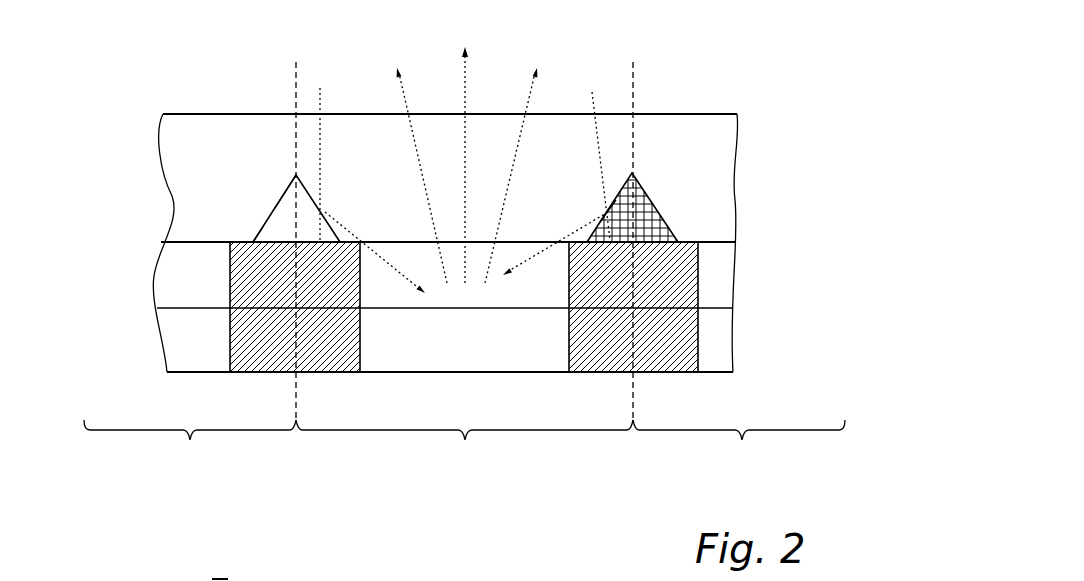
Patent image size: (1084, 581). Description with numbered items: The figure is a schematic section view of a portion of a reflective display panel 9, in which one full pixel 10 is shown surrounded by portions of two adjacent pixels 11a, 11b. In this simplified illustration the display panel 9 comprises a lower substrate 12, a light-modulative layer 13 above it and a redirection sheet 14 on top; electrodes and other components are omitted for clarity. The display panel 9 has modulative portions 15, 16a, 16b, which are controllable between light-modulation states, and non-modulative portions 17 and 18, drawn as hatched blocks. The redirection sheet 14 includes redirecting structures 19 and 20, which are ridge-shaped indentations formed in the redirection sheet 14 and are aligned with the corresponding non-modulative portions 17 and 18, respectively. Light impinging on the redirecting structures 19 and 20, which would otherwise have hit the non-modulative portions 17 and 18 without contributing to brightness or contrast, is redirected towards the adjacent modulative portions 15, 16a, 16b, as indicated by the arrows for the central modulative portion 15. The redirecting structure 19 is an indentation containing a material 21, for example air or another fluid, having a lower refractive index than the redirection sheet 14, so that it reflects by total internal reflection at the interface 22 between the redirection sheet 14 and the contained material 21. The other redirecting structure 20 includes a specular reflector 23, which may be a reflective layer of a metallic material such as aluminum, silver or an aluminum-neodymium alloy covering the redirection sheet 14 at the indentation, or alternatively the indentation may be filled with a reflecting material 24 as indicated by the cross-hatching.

The reflective display panel 9 is at (722, 78).
The pixel 10 is at (464, 259).
The adjacent pixel 11a is at (193, 445).
The adjacent pixel 11b is at (739, 446).
The lower substrate 12 is at (727, 346).
The light-modulative layer 13 is at (732, 280).
The redirection sheet 14 is at (735, 173).
The modulative portion 15 is at (510, 372).
The modulative portion 16a is at (192, 372).
The modulative portion 16b is at (703, 372).
The non-modulative portion 17 is at (320, 372).
The non-modulative portion 18 is at (647, 372).
The redirecting structure 19 is at (267, 208).
The redirecting structure 20 is at (656, 203).
The material 21 is at (287, 207).
The interface 22 is at (252, 232).
The specular reflector 23 is at (608, 212).
The reflecting material 24 is at (640, 195).